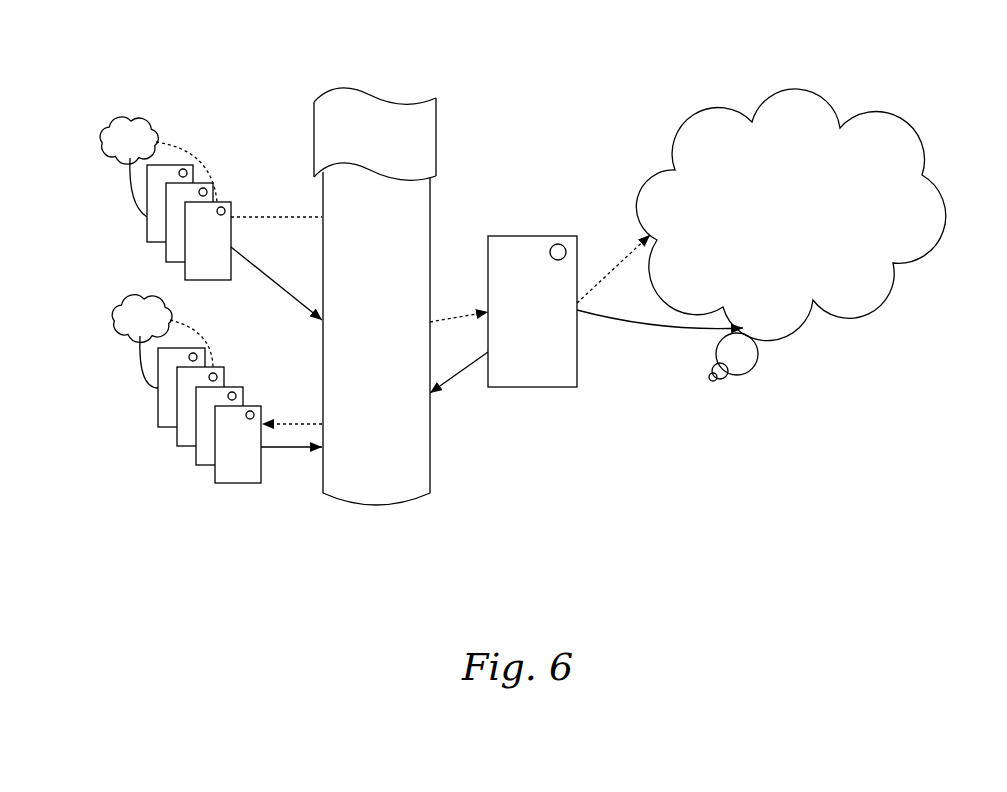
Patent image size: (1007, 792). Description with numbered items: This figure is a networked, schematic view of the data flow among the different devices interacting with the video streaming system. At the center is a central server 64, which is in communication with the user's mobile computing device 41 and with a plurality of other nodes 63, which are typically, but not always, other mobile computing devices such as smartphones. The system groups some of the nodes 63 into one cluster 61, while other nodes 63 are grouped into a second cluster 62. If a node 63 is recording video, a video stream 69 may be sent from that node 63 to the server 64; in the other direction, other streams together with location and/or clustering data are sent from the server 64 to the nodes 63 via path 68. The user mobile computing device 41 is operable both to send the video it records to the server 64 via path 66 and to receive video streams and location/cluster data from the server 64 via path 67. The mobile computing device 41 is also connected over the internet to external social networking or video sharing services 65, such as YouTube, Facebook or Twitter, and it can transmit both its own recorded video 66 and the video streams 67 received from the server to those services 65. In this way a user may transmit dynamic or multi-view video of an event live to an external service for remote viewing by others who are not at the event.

The user mobile computing device 41 is at (550, 373).
The cluster 61 is at (128, 320).
The cluster 62 is at (117, 132).
The nodes 63 is at (166, 245).
The central server 64 is at (363, 483).
The external social networking or video sharing services 65 is at (783, 288).
The path 66 is at (463, 370).
The path 67 is at (452, 315).
The path 68 is at (280, 217).
The video stream 69 is at (278, 287).